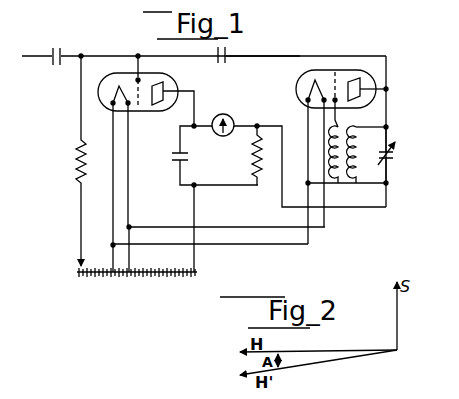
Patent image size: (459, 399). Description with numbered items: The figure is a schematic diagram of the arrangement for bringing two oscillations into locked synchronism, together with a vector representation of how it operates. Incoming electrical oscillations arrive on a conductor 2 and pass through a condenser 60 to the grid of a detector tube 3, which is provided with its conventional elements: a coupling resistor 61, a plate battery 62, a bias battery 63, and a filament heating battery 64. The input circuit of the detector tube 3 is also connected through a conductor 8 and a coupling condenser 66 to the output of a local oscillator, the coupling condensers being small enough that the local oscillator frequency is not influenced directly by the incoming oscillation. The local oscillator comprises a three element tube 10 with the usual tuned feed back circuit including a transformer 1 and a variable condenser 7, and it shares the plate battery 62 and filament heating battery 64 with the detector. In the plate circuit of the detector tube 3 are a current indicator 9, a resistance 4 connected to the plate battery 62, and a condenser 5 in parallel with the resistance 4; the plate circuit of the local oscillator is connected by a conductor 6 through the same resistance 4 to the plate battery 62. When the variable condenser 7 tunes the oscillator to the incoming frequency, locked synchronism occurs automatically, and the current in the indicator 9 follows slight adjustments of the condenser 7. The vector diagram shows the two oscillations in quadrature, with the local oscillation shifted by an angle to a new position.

The transformer 1 is at (352, 122).
The conductor 2 is at (32, 58).
The detector tube 3 is at (168, 80).
The resistance 4 is at (253, 160).
The condenser 5 is at (173, 162).
The conductor 6 is at (282, 183).
The variable condenser 7 is at (397, 158).
The conductor 8 is at (258, 56).
The current indicator 9 is at (233, 122).
The three element tube 10 is at (355, 72).
The condenser 60 is at (58, 68).
The coupling resistor 61 is at (78, 160).
The plate battery 62 is at (160, 277).
The bias battery 63 is at (85, 277).
The filament heating battery 64 is at (122, 277).
The capacitor 66 is at (220, 63).